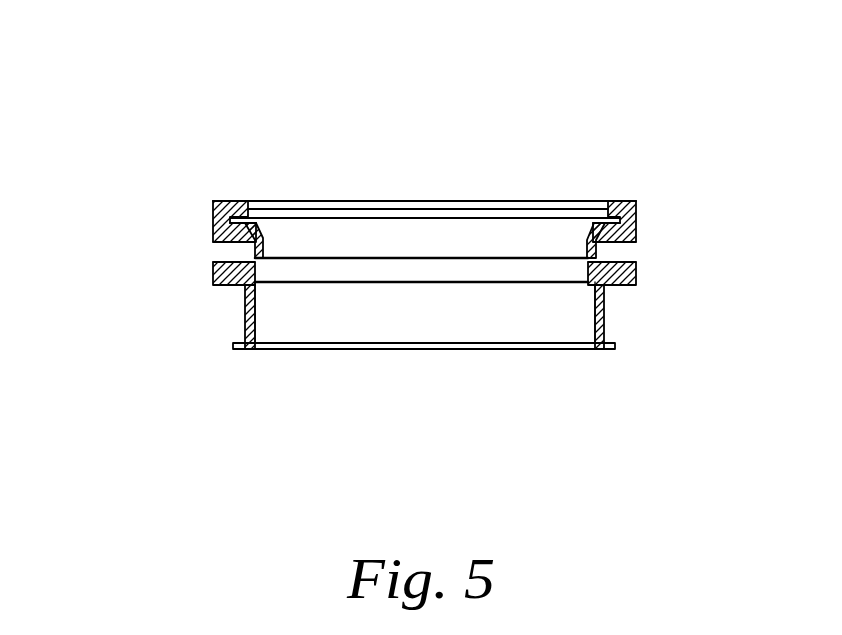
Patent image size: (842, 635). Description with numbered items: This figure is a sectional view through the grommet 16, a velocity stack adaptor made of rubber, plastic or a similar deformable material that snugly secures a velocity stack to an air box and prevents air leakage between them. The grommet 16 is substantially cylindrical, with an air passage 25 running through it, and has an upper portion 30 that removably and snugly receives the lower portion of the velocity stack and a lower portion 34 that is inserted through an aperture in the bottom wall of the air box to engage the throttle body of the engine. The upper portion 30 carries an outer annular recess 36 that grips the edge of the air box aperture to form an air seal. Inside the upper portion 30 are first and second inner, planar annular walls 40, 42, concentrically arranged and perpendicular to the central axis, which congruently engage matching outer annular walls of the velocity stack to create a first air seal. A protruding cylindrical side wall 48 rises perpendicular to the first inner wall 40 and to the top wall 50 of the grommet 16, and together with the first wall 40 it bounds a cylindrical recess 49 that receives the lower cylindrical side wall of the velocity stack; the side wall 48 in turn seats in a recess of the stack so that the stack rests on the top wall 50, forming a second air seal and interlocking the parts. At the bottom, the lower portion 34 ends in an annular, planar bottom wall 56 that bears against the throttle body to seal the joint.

The grommet 16 is at (685, 203).
The air passage 25 is at (428, 300).
The upper portion 30 is at (215, 217).
The lower portion 34 is at (240, 318).
The outer annular recess 36 is at (207, 257).
The first inner planar annular wall 40 is at (266, 201).
The second inner planar annular wall 42 is at (262, 243).
The protruding cylindrical side wall 48 is at (255, 201).
The cylindrical recess 49 is at (230, 249).
The top wall 50 is at (221, 215).
The annular planar bottom wall 56 is at (247, 350).